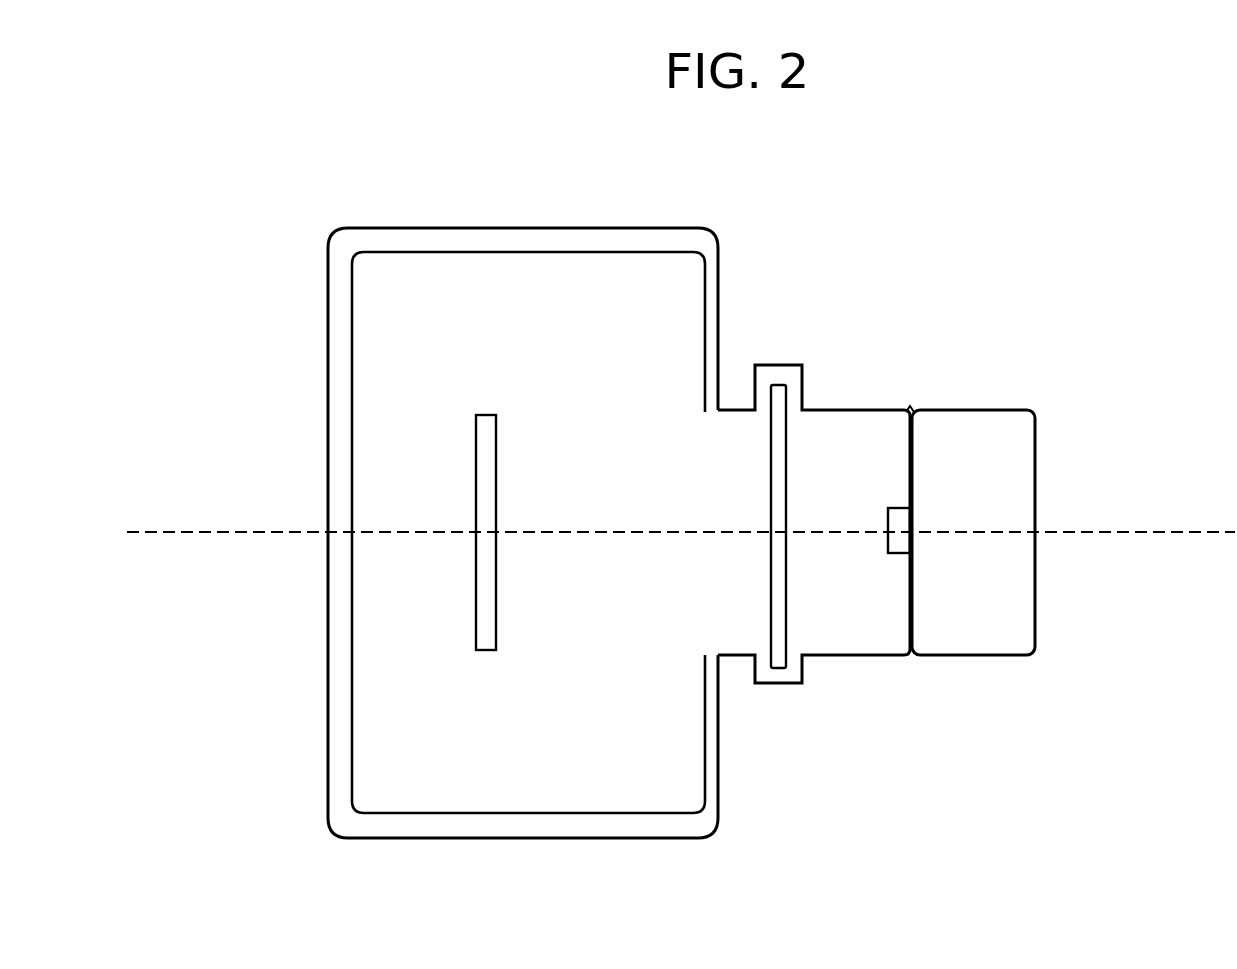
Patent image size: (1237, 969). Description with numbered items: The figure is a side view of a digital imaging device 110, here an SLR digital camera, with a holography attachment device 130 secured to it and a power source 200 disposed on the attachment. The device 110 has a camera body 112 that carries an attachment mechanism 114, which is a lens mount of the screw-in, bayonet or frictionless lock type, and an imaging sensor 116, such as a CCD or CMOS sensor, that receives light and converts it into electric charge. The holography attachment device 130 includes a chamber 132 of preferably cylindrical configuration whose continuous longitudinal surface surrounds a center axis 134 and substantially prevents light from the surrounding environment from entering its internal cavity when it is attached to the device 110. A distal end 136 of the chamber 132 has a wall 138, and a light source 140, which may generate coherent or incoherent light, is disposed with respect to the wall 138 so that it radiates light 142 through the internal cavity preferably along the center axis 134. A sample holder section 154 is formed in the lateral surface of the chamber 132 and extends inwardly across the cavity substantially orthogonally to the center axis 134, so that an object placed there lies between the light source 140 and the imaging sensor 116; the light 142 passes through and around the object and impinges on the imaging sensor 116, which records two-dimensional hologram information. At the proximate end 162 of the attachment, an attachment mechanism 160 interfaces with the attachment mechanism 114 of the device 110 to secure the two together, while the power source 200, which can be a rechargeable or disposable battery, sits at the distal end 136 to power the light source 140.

The digital imaging device 110 is at (268, 308).
The camera body 112 is at (490, 228).
The attachment mechanism 114 is at (738, 393).
The imaging sensor 116 is at (458, 477).
The holography attachment device 130 is at (880, 318).
The chamber 132 is at (852, 656).
The center axis 134 is at (1180, 539).
The distal end 136 is at (911, 401).
The wall 138 is at (913, 605).
The light source 140 is at (899, 517).
The light 142 is at (802, 549).
The sample holder section 154 is at (782, 692).
The attachment mechanism 160 is at (736, 675).
The proximate end 162 is at (740, 479).
The power source 200 is at (1020, 446).